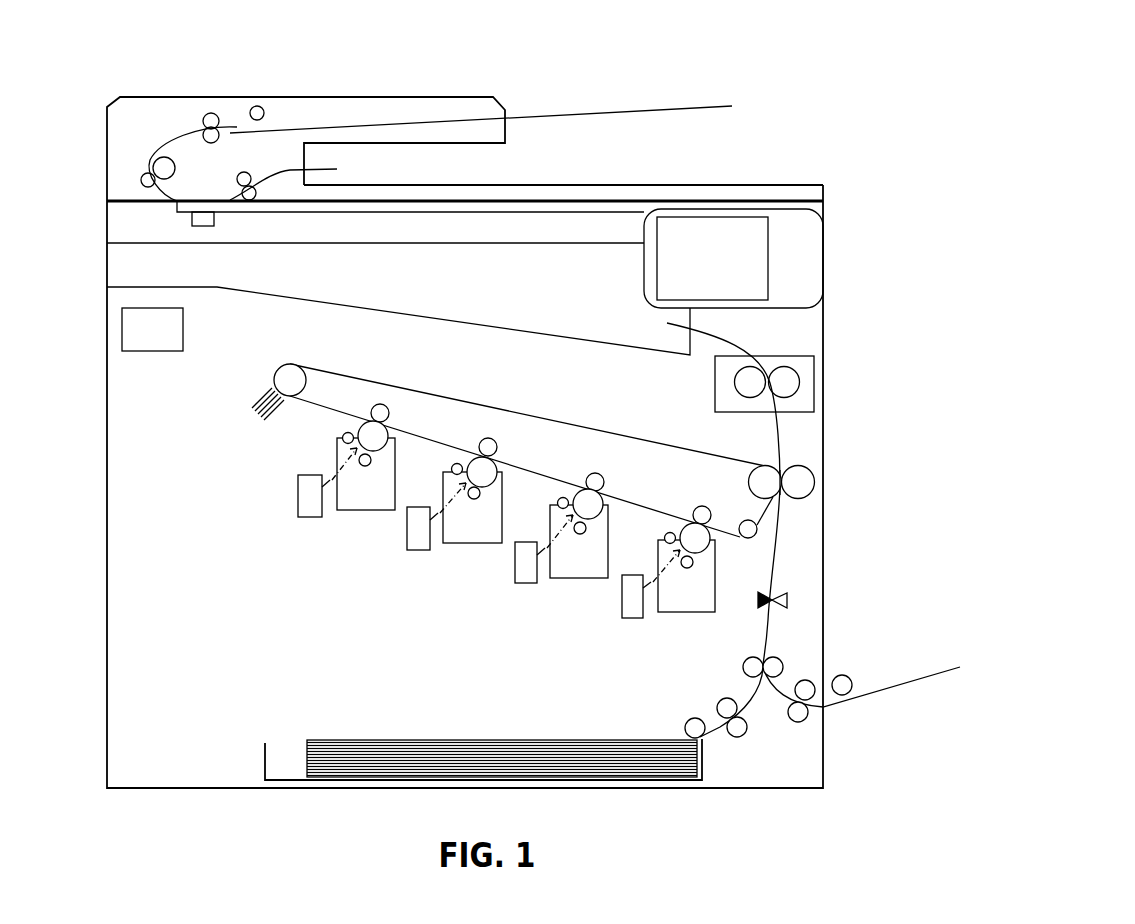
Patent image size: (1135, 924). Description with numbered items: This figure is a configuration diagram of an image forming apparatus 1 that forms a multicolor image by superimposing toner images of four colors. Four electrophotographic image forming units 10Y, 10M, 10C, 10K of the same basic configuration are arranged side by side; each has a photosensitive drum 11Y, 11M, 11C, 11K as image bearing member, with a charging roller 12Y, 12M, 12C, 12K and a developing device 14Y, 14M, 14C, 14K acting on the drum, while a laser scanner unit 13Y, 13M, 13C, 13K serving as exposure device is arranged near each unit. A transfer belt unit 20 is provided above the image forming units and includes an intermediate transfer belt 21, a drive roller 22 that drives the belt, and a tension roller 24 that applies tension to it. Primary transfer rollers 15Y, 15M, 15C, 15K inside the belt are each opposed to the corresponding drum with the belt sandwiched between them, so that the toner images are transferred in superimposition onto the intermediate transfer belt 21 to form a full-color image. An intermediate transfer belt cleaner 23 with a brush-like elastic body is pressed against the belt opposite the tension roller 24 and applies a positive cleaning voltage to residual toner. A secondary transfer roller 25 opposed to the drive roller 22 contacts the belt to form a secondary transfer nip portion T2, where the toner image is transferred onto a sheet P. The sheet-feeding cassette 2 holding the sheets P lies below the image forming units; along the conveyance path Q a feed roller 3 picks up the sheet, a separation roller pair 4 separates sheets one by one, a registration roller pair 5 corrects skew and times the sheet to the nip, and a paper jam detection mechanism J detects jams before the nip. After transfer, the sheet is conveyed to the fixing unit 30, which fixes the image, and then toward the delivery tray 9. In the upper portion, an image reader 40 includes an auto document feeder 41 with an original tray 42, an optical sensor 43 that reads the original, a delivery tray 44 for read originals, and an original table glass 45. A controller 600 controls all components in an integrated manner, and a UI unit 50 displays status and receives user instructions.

The image forming apparatus 1 is at (725, 53).
The sheet-feeding cassette 2 is at (452, 737).
The feed roller 3 is at (685, 728).
The separation roller pair 4 is at (739, 742).
The registration roller pair 5 is at (743, 667).
The delivery tray 9 is at (538, 332).
The transfer belt unit 20 is at (517, 429).
The intermediate transfer belt 21 is at (531, 450).
The drive roller 22 is at (755, 465).
The intermediate transfer belt cleaner 23 is at (267, 385).
The tension roller 24 is at (287, 363).
The secondary transfer roller 25 is at (813, 473).
The fixing unit 30 is at (773, 355).
The image reader 40 is at (432, 192).
The auto document feeder 41 is at (320, 97).
The original tray 42 is at (635, 110).
The optical sensor 43 is at (214, 220).
The delivery tray 44 is at (613, 184).
The original table glass 45 is at (497, 200).
The UI unit 50 is at (818, 260).
The controller 600 is at (155, 352).
The image forming unit 10Y is at (357, 521).
The photosensitive drum 11Y is at (390, 445).
The charging roller 12Y is at (365, 466).
The laser scanner unit 13Y is at (313, 517).
The developing device 14Y is at (345, 440).
The primary transfer roller 15Y is at (378, 405).
The image forming unit 10M is at (464, 553).
The photosensitive drum 11M is at (498, 478).
The charging roller 12M is at (474, 499).
The laser scanner unit 13M is at (420, 550).
The developing device 14M is at (452, 472).
The primary transfer roller 15M is at (481, 441).
The image forming unit 10C is at (567, 587).
The photosensitive drum 11C is at (604, 510).
The charging roller 12C is at (580, 534).
The laser scanner unit 13C is at (527, 583).
The developing device 14C is at (558, 506).
The primary transfer roller 15C is at (592, 473).
The image forming unit 10K is at (672, 611).
The photosensitive drum 11K is at (712, 546).
The charging roller 12K is at (687, 568).
The laser scanner unit 13K is at (634, 618).
The developing device 14K is at (665, 541).
The primary transfer roller 15K is at (698, 506).
The secondary transfer nip portion T2 is at (783, 497).
The conveyance path Q is at (778, 565).
The paper jam detection mechanism J is at (787, 607).
The sheet P is at (385, 740).